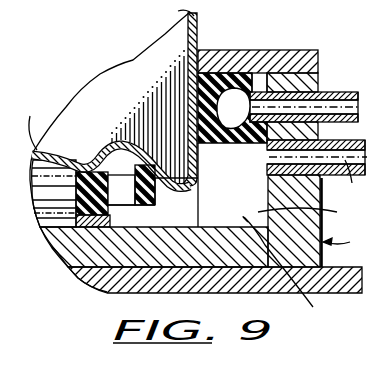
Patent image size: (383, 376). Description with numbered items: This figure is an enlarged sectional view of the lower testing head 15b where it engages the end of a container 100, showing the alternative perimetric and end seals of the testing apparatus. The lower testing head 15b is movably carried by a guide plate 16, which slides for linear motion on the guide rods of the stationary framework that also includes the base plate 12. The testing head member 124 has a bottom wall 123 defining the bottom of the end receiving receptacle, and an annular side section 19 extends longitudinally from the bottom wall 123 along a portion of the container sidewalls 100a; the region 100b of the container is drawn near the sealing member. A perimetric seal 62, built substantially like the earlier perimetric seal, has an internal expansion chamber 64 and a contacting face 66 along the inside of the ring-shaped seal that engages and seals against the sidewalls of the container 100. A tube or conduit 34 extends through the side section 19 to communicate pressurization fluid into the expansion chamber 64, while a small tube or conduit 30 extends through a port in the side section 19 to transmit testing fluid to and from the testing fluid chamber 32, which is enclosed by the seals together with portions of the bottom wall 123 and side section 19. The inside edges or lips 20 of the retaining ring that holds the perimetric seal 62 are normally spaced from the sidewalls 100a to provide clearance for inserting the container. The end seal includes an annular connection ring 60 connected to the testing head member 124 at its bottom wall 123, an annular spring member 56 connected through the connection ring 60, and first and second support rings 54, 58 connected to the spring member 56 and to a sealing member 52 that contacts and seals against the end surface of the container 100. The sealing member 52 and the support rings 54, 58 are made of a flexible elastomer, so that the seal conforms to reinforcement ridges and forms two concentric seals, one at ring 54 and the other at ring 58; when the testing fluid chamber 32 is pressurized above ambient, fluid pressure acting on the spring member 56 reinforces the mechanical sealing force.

The container 100 is at (134, 68).
The container sidewalls 100a is at (176, 24).
The membrane lower portion 100b is at (58, 112).
The contacting face 66 is at (204, 68).
The perimetric seal 62 is at (270, 65).
The inside edges or lips 20 is at (228, 64).
The internal expansion chamber 64 is at (235, 122).
The tube or conduit 34 is at (337, 112).
The base plate 12 is at (325, 155).
The tube or conduit 30 is at (349, 181).
The annular side section 19 is at (282, 190).
The testing fluid chamber 32 is at (308, 213).
The testing head member 124 is at (326, 262).
The lower testing head 15b is at (348, 241).
The annular connection ring 60 is at (85, 227).
The guide plate 16 is at (128, 280).
The bottom wall 123 is at (292, 269).
The first support ring 54 is at (75, 190).
The sealing member 52 is at (108, 150).
The second support ring 58 is at (152, 192).
The annular spring member 56 is at (140, 214).